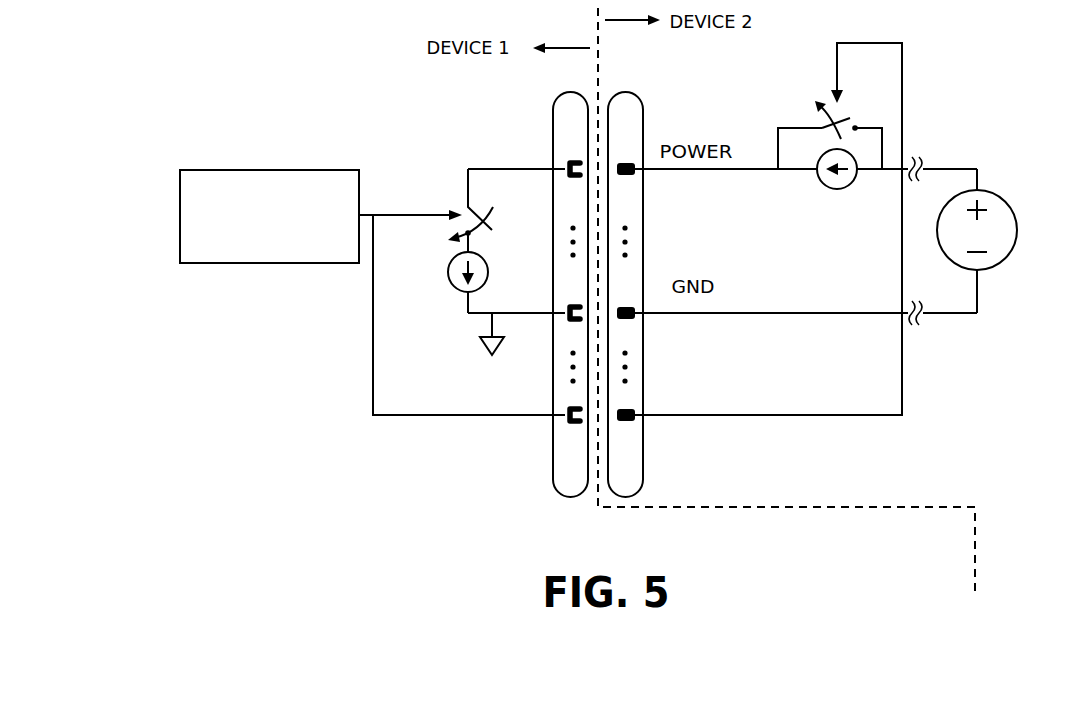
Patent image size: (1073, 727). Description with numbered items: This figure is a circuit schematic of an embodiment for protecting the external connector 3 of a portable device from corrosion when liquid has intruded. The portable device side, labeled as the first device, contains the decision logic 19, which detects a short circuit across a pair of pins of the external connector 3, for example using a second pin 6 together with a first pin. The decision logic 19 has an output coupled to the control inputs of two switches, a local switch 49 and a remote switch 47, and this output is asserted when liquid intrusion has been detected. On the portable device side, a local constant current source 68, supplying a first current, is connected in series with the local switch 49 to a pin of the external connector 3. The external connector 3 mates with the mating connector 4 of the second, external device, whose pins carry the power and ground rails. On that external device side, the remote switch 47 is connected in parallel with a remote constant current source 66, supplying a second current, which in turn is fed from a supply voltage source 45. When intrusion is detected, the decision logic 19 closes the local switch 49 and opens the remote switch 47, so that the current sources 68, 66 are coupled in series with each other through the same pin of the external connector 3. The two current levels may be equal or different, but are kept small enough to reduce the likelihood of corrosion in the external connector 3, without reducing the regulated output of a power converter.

The decision logic 19 is at (331, 170).
The external connector 3 is at (553, 100).
The mating connector 4 is at (645, 96).
The second pin 6 is at (578, 160).
The local switch 49 is at (482, 206).
The local constant current source 68 is at (450, 282).
The remote switch 47 is at (820, 120).
The remote constant current source 66 is at (820, 174).
The voltage source Vcc 45 is at (1005, 263).